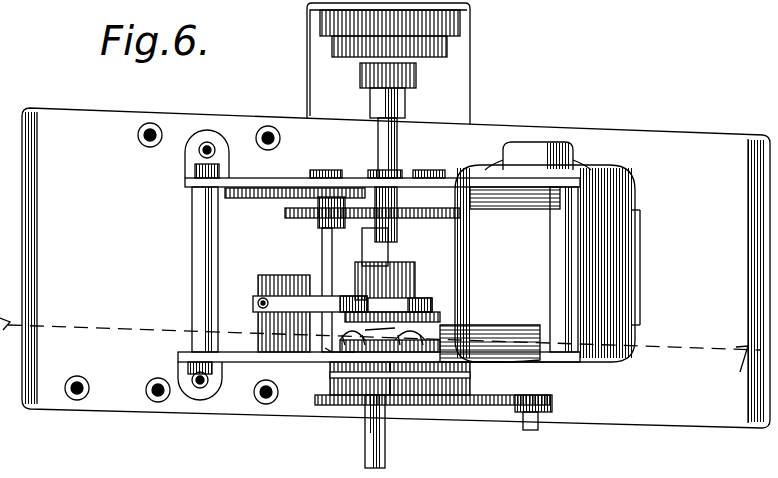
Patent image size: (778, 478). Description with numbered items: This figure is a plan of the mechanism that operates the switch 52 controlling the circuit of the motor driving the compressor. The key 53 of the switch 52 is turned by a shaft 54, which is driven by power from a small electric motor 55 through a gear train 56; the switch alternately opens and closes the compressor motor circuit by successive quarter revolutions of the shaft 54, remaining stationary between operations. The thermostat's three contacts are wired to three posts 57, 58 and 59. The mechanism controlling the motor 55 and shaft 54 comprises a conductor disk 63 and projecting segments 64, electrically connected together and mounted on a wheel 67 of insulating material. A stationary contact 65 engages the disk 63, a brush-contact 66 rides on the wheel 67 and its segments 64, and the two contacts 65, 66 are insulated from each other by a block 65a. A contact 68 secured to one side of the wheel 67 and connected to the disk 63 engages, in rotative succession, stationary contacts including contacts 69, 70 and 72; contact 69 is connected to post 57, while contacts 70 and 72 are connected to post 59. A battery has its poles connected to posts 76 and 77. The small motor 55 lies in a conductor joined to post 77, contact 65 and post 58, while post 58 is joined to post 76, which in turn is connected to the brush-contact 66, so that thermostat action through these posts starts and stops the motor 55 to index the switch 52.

The switch 52 is at (462, 28).
The key 53 is at (416, 76).
The shaft 54 is at (398, 136).
The small electric motor 55 is at (640, 245).
The gear train 56 is at (470, 400).
The post 57 is at (75, 392).
The post 58 is at (157, 394).
The post 59 is at (265, 396).
The conductor disk 63 is at (412, 290).
The projecting segments 64 is at (455, 330).
The stationary contact 65 is at (300, 276).
The block 65a is at (258, 303).
The brush-contact 66 is at (310, 305).
The wheel 67 is at (432, 303).
The contact 68 is at (432, 338).
The stationary contact 69 is at (375, 368).
The stationary contact 70 is at (400, 372).
The stationary contact 72 is at (330, 357).
The post 76 is at (152, 133).
The post 77 is at (270, 136).